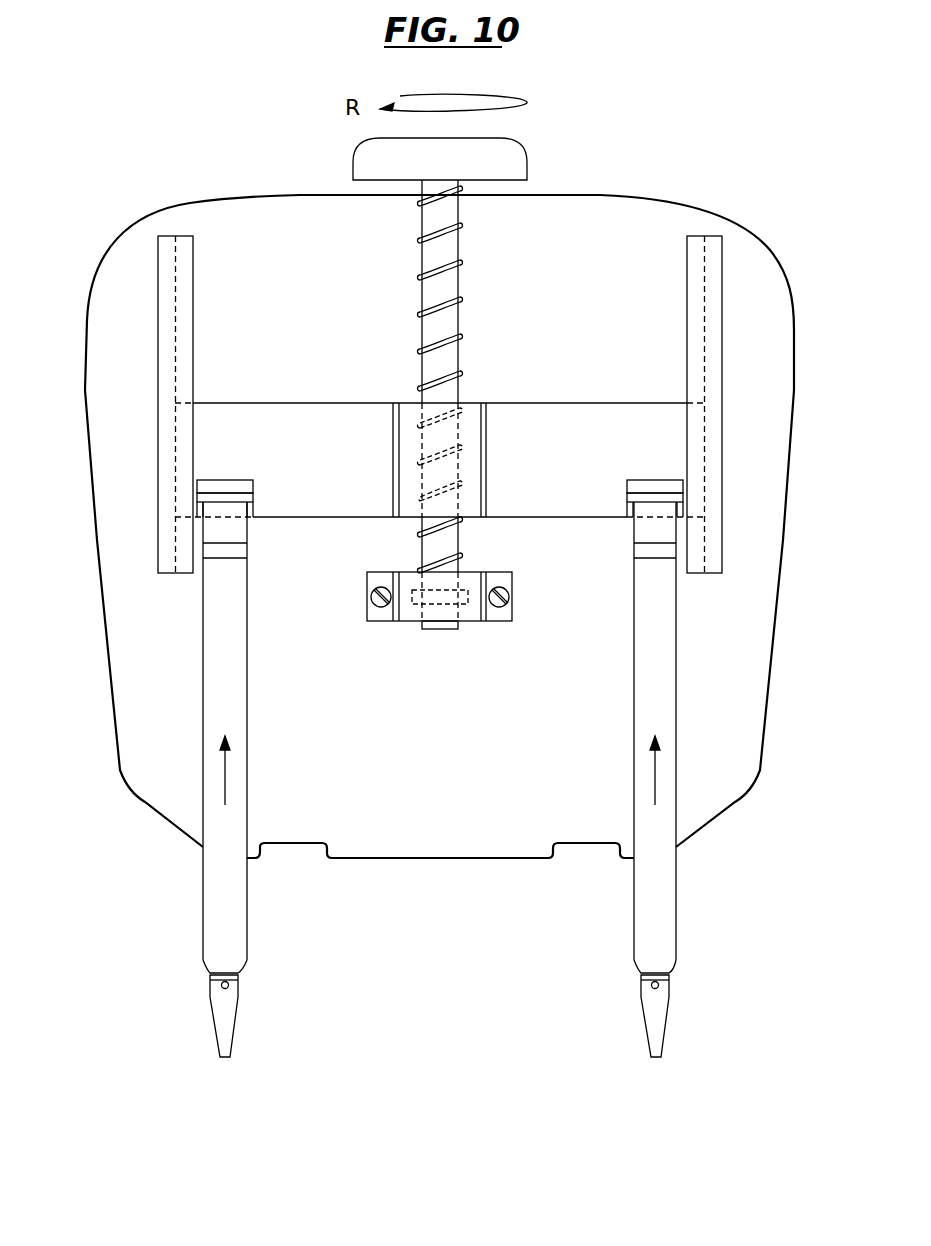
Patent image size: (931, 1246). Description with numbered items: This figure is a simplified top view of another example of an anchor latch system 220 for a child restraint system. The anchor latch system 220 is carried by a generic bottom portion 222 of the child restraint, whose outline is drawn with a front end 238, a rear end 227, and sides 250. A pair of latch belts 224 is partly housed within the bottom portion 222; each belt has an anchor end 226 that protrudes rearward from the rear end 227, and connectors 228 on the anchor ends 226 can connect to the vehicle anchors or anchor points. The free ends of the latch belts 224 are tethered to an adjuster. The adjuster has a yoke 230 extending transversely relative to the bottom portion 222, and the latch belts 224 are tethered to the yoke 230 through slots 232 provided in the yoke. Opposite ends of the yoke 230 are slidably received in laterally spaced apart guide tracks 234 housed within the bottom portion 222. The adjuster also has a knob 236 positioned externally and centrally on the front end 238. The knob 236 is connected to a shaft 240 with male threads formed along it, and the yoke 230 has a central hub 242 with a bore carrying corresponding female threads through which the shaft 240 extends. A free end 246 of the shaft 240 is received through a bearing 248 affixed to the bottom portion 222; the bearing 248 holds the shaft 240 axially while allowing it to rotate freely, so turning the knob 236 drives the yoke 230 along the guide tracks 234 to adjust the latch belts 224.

The anchor latch system 220 is at (590, 368).
The bottom portion 222 is at (125, 800).
The latch belts 224 is at (222, 688).
The anchor end 226 is at (248, 963).
The rear end 227 is at (441, 860).
The connectors 228 is at (228, 1013).
The yoke 230 is at (316, 404).
The slots 232 is at (240, 487).
The guide tracks 234 is at (186, 325).
The knob 236 is at (528, 150).
The front end 238 is at (600, 195).
The shaft 240 is at (450, 281).
The central hub 242 is at (470, 410).
The free end 246 is at (440, 630).
The bearing 248 is at (480, 620).
The side 250 is at (100, 580).